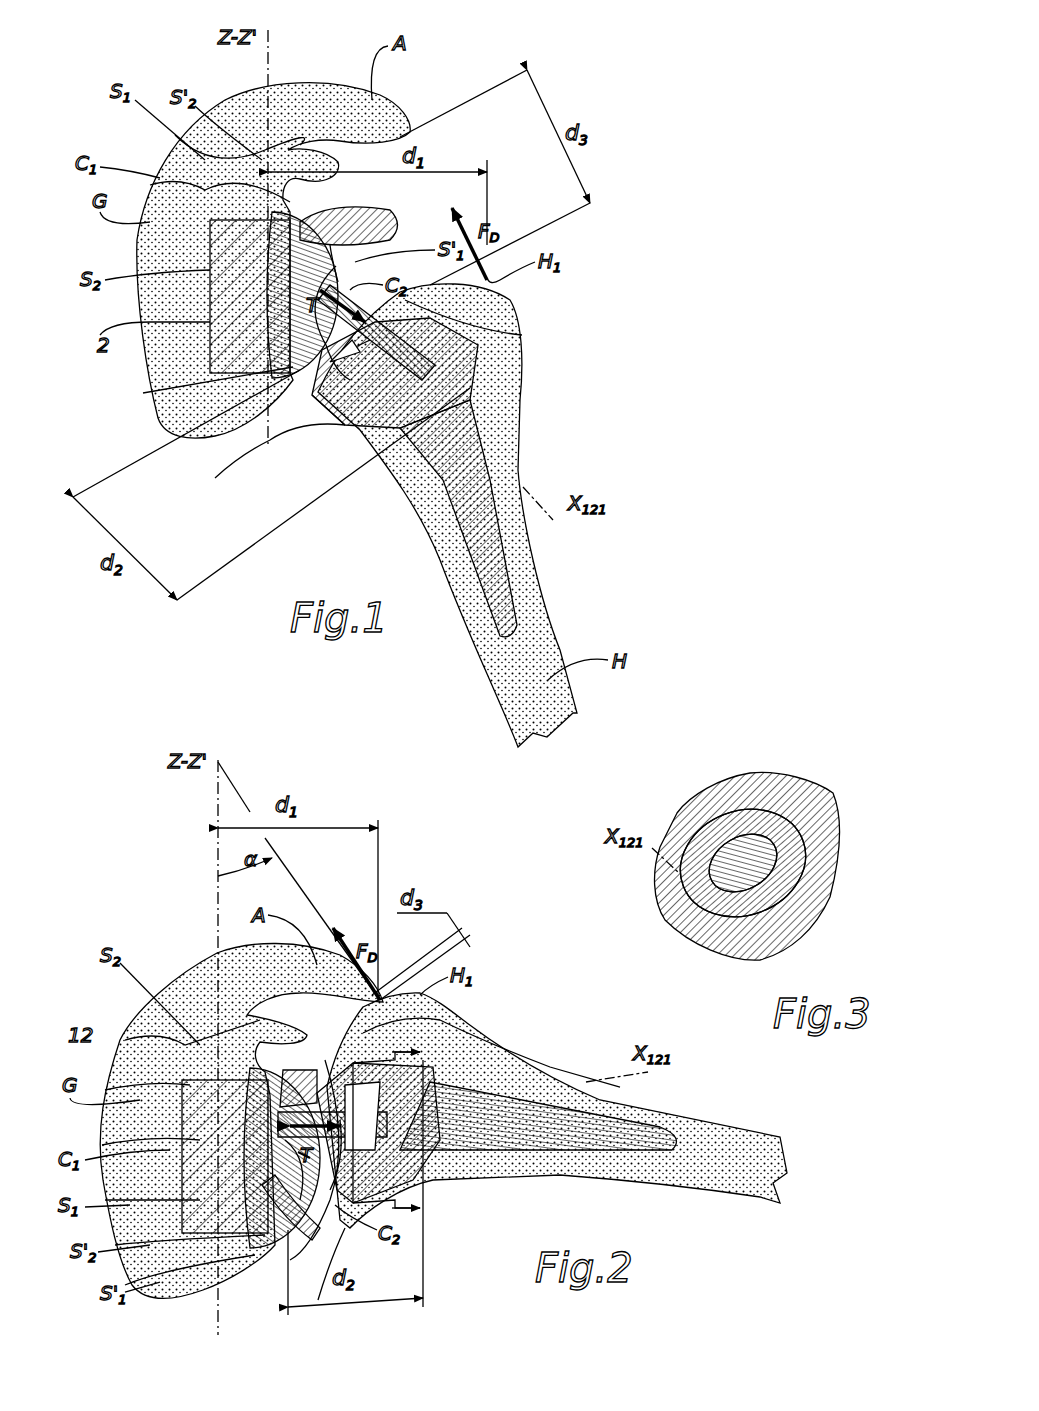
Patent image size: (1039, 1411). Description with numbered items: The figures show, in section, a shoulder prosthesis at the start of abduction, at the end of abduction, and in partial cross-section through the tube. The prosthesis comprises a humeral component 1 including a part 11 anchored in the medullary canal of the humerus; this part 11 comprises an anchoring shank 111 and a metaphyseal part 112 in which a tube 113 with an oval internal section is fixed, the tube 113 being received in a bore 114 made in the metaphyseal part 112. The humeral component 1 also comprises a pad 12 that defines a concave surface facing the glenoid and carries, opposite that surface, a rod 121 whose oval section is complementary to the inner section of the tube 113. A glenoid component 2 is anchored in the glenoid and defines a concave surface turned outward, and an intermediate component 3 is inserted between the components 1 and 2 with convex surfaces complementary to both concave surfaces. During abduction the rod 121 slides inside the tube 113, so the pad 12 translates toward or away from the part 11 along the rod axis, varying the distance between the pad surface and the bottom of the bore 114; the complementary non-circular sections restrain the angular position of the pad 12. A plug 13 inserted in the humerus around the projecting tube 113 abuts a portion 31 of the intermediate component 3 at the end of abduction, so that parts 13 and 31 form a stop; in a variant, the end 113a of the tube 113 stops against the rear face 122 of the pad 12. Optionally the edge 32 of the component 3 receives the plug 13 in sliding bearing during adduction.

In FIG. 1, the humeral component 1 is at (590, 380).
In FIG. 1, the glenoid component 2 is at (330, 325).
In FIG. 1, the intermediate component 3 is at (330, 215).
In FIG. 1, the part anchored in the medullary canal 11 is at (377, 477).
In FIG. 2, the part anchored in the medullary canal 11 is at (496, 1103).
In FIG. 1, the pad 12 is at (405, 300).
In FIG. 2, the pad 12 is at (240, 1110).
In FIG. 1, the plug 13 is at (250, 450).
In FIG. 2, the plug 13 is at (395, 1050).
In FIG. 1, the portion of the intermediate component 31 is at (370, 240).
In FIG. 2, the portion of the intermediate component 31 is at (305, 1090).
In FIG. 2, the edge of the intermediate component 32 is at (333, 1222).
In FIG. 1, the anchoring shank 111 is at (470, 445).
In FIG. 1, the metaphyseal part 112 is at (430, 340).
In FIG. 3, the metaphyseal part 112 is at (785, 935).
In FIG. 1, the tube 113 is at (345, 430).
In FIG. 2, the tube 113 is at (400, 1085).
In FIG. 3, the tube 113 is at (800, 848).
In FIG. 1, the end of the tube 113a is at (300, 395).
In FIG. 1, the bore 114 is at (400, 480).
In FIG. 1, the rod 121 is at (215, 380).
In FIG. 3, the rod 121 is at (738, 838).
In FIG. 2, the rear face of the pad 122 is at (288, 1250).